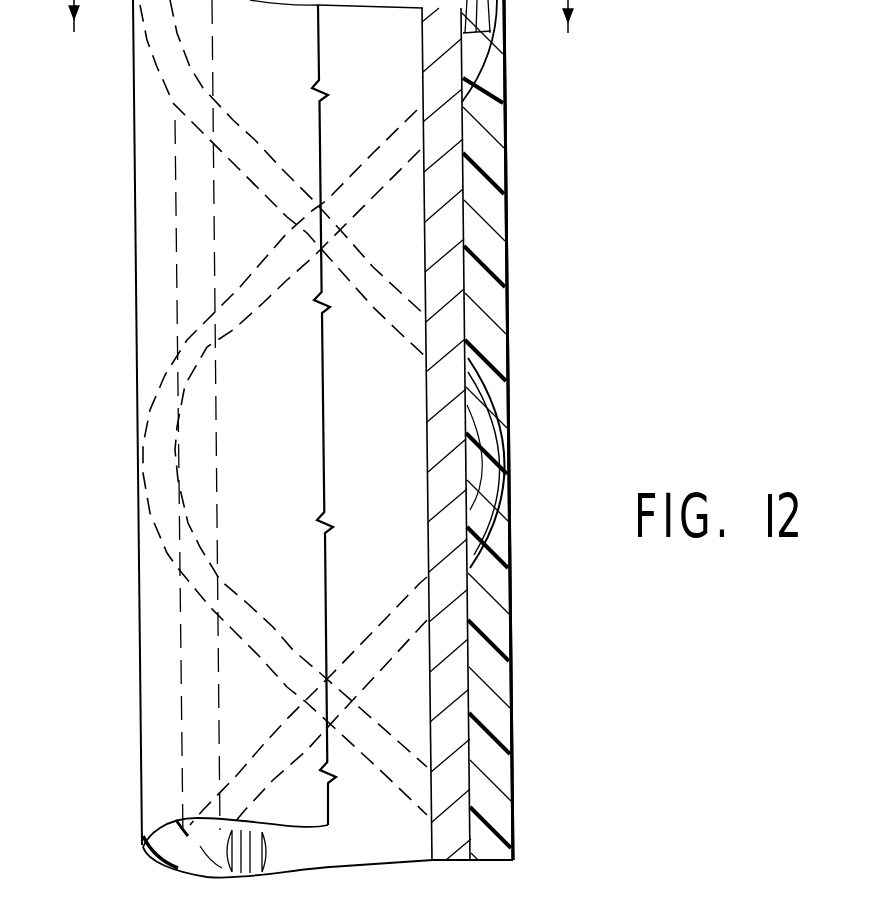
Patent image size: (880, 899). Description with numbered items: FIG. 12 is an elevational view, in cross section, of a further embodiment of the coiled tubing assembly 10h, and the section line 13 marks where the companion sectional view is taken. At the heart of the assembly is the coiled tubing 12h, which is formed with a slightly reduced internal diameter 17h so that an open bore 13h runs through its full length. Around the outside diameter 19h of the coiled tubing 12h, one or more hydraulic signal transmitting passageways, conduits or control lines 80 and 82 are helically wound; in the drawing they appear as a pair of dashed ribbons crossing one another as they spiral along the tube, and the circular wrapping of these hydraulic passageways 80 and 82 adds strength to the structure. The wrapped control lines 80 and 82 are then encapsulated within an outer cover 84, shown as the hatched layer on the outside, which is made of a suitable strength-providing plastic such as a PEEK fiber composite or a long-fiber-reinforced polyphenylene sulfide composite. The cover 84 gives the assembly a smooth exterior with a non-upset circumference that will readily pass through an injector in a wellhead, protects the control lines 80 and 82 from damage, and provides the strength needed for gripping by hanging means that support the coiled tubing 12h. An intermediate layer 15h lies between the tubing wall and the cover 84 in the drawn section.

The tubular medical device body 10h is at (511, 808).
The coiled tubing 12h is at (437, 222).
The open bore 13h is at (400, 109).
The intermediate layer 15h is at (453, 760).
The internal diameter 17h is at (440, 668).
The outside diameter 19h is at (472, 648).
The hydraulic signal transmitting passageway 80 is at (163, 80).
The hydraulic passageway 82 is at (475, 57).
The outer cover 84 is at (492, 308).
The section line 13- 13 is at (318, 44).